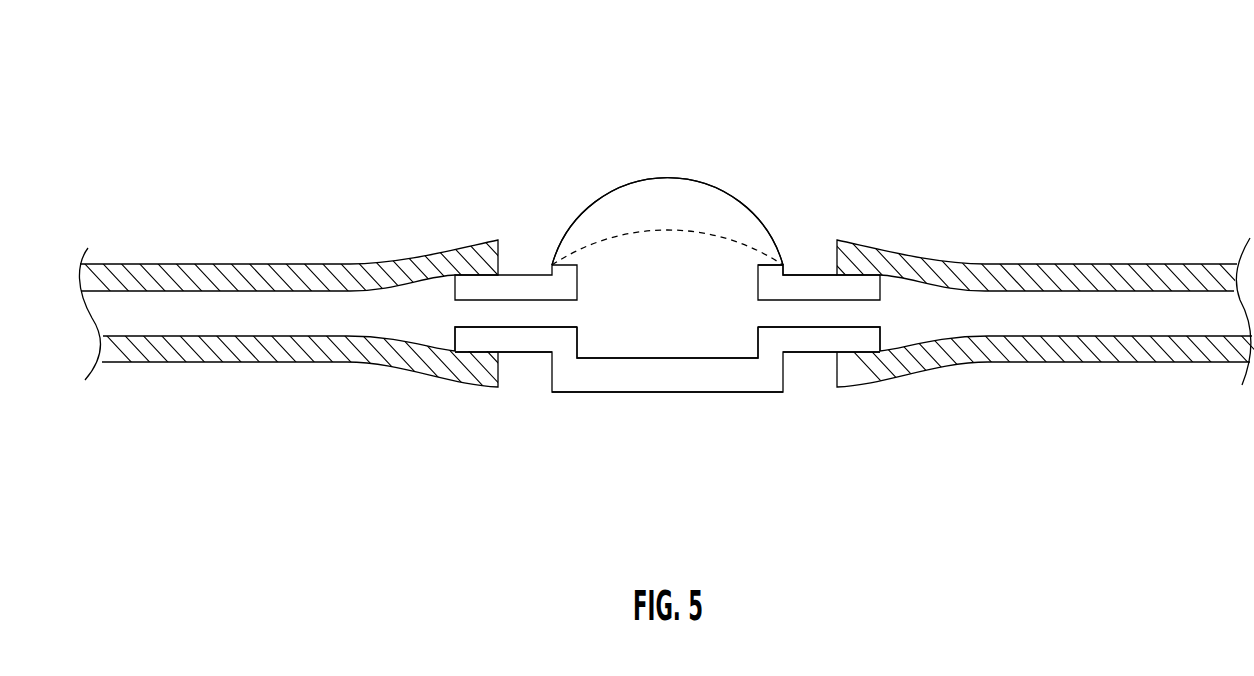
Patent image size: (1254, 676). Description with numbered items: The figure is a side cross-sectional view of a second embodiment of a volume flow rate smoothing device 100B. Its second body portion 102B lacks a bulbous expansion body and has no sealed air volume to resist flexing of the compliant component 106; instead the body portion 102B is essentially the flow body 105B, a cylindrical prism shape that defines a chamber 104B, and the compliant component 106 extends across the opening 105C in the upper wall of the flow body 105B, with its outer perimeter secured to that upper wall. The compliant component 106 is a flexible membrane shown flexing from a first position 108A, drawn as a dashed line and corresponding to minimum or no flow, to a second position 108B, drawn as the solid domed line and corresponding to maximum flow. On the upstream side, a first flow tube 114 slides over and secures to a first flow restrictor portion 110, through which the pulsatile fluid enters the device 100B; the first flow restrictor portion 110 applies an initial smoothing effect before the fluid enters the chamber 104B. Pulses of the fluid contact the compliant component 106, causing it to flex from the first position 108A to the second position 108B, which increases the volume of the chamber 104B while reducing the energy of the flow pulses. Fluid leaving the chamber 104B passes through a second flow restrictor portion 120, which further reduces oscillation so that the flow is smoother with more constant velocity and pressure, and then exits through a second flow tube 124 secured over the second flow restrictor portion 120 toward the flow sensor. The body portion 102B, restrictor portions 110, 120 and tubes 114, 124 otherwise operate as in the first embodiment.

The volume flow rate smoothing device 100B is at (692, 73).
The second body portion 102B is at (612, 392).
The chamber 104B is at (675, 325).
The flow body 105B is at (745, 394).
The opening 105C is at (760, 273).
The compliant component 106 is at (672, 177).
The first position 108A is at (748, 240).
The second position 108B is at (585, 213).
The first flow restrictor portion 110 is at (526, 338).
The first flow tube 114 is at (207, 264).
The second flow restrictor portion 120 is at (817, 338).
The second flow tube 124 is at (1093, 264).